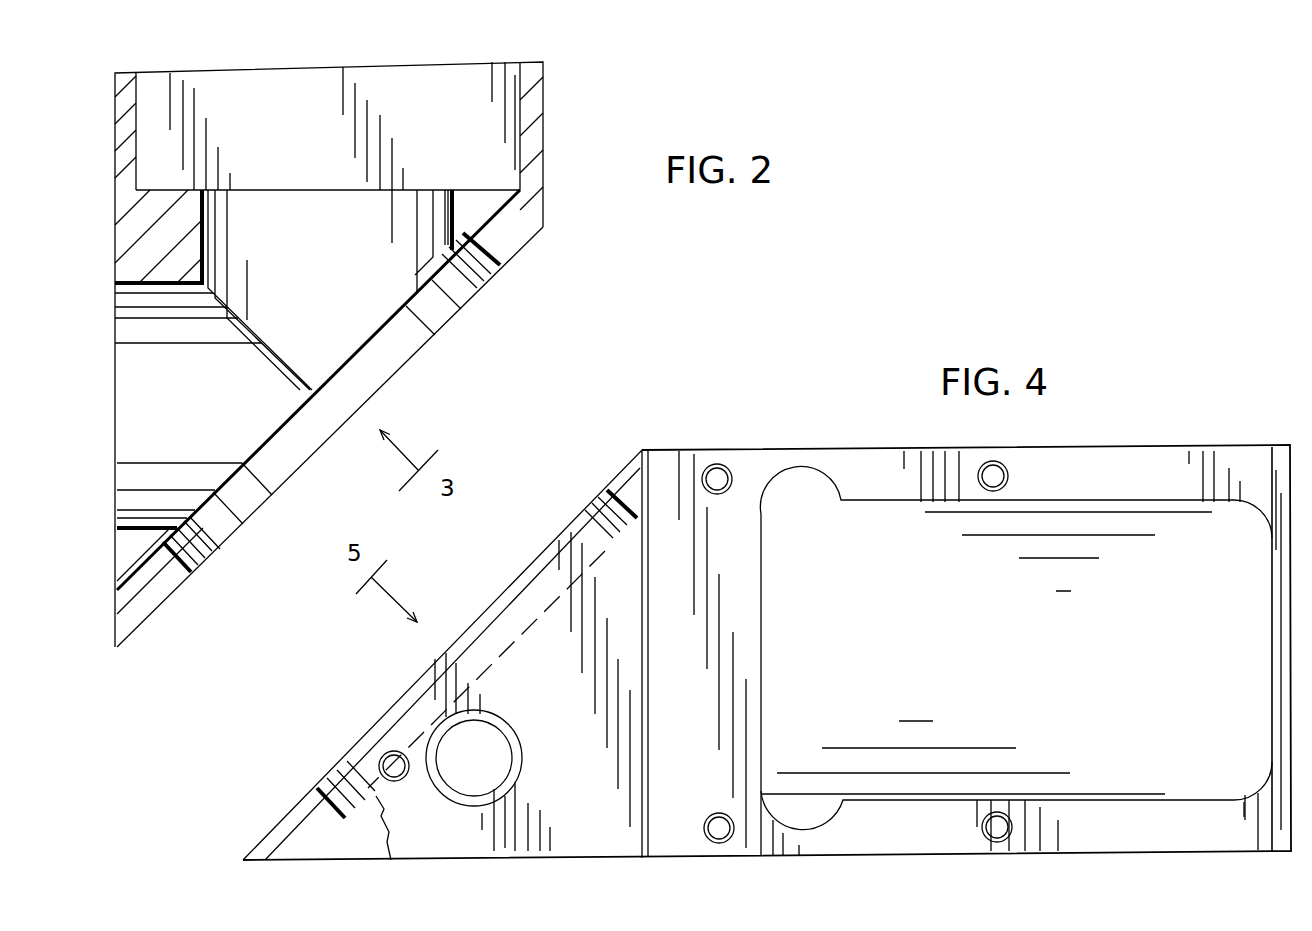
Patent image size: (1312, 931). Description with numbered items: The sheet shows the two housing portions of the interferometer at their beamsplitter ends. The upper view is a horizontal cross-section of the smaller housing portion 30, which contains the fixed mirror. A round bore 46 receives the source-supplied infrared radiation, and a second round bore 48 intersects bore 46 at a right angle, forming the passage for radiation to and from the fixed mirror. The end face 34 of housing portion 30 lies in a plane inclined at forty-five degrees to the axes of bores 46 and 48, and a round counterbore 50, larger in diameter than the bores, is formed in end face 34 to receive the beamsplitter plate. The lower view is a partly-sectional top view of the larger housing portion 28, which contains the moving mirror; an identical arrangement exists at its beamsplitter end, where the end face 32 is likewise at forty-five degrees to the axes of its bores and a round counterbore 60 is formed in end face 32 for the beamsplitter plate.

In FIG. 2, the smaller housing portion 30 is at (108, 137).
In FIG. 2, the round bore 48 is at (235, 215).
In FIG. 2, the end face 34 is at (522, 247).
In FIG. 2, the round bore 46 is at (148, 413).
In FIG. 2, the round counterbore 50 is at (210, 545).
In FIG. 4, the end face 32 is at (622, 473).
In FIG. 4, the round counterbore 60 is at (593, 503).
In FIG. 4, the larger housing portion 28 is at (290, 797).